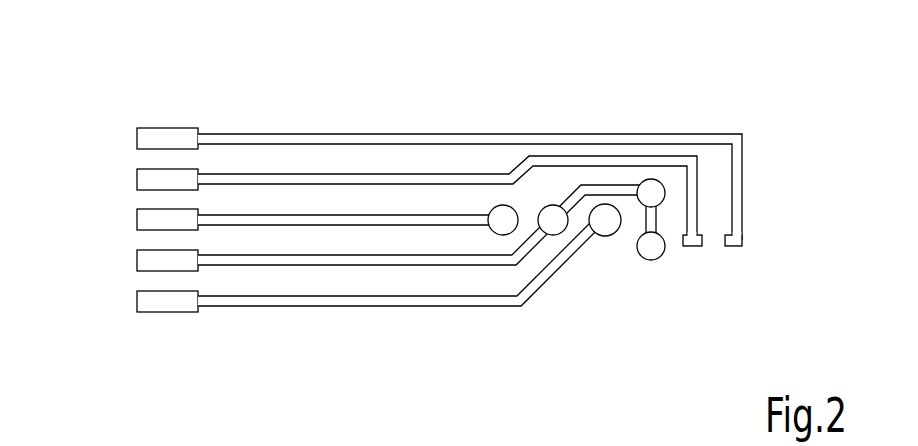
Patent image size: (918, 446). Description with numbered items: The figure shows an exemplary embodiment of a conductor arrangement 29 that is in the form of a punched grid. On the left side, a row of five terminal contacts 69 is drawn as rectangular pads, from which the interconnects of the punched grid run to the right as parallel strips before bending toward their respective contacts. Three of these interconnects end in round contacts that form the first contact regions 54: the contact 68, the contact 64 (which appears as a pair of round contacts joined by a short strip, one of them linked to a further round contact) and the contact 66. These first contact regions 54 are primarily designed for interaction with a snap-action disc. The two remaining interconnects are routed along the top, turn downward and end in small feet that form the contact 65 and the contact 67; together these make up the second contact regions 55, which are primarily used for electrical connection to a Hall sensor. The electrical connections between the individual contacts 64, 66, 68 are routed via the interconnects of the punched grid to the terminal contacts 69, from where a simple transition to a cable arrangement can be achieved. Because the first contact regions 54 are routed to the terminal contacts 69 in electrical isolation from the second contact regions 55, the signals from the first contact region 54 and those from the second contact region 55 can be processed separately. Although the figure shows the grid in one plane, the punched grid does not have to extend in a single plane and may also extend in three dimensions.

The conductor arrangement 29 is at (426, 191).
The first contact regions 54 is at (588, 258).
The second contact regions 55 is at (707, 258).
The contact 64 is at (549, 218).
The contact 65 is at (692, 207).
The contact 66 is at (605, 220).
The contact 67 is at (738, 217).
The contact 68 is at (502, 219).
The terminal contacts 69 is at (142, 142).